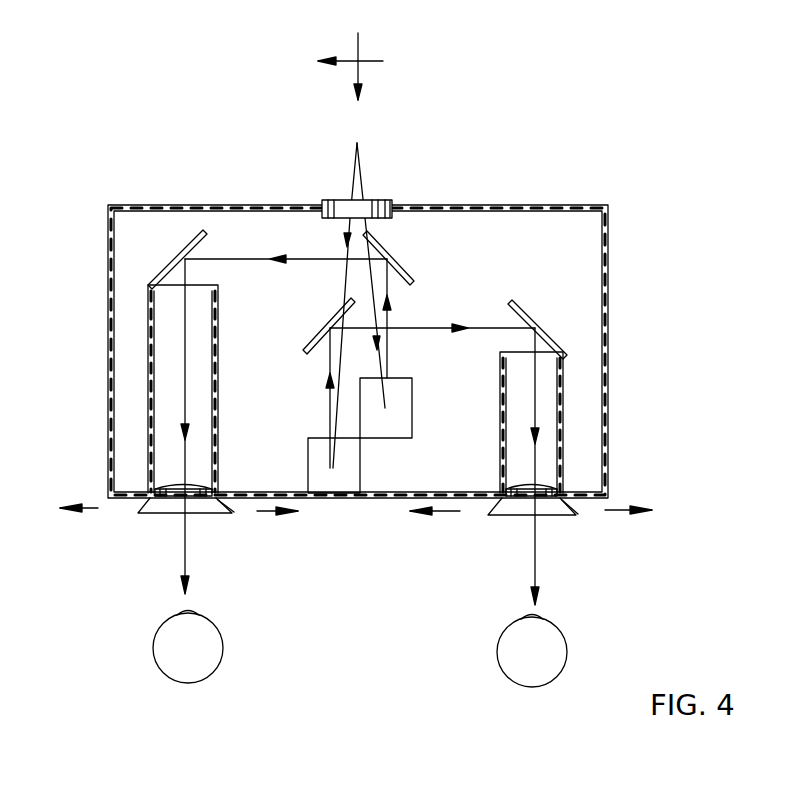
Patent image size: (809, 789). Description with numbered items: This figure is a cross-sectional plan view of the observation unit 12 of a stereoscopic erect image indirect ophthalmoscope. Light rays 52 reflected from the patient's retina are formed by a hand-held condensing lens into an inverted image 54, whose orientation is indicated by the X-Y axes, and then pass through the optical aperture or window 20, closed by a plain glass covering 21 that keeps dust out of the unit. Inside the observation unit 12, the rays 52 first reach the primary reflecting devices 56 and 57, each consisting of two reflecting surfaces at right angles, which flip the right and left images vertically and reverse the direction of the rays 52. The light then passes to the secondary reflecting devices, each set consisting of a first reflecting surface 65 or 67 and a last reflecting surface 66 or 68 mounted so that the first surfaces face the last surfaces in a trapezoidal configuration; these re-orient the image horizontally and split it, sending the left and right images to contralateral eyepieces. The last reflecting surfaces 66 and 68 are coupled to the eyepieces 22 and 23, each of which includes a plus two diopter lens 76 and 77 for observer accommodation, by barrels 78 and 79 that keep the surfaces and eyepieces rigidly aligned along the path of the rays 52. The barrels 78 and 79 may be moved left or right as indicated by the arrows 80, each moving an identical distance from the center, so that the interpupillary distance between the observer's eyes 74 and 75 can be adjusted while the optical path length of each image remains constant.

The observation unit 12 is at (545, 207).
The optical aperture 20 is at (340, 200).
The plain glass covering 21 is at (383, 217).
The eyepiece 22 is at (140, 507).
The eyepiece 23 is at (577, 515).
The light rays 52 is at (365, 185).
The inverted image 54 is at (357, 62).
The primary reflecting device 56 is at (412, 400).
The primary reflecting device 57 is at (360, 472).
The first reflecting surface 65 is at (398, 262).
The last reflecting surface 66 is at (184, 255).
The first reflecting surface 67 is at (312, 344).
The last reflecting surface 68 is at (550, 337).
The eye of the observer 74 is at (170, 681).
The eye of the observer 75 is at (520, 686).
The lens 76 is at (205, 486).
The lens 77 is at (519, 487).
The barrel 78 is at (148, 397).
The barrel 79 is at (566, 417).
The arrows 80 is at (98, 508).